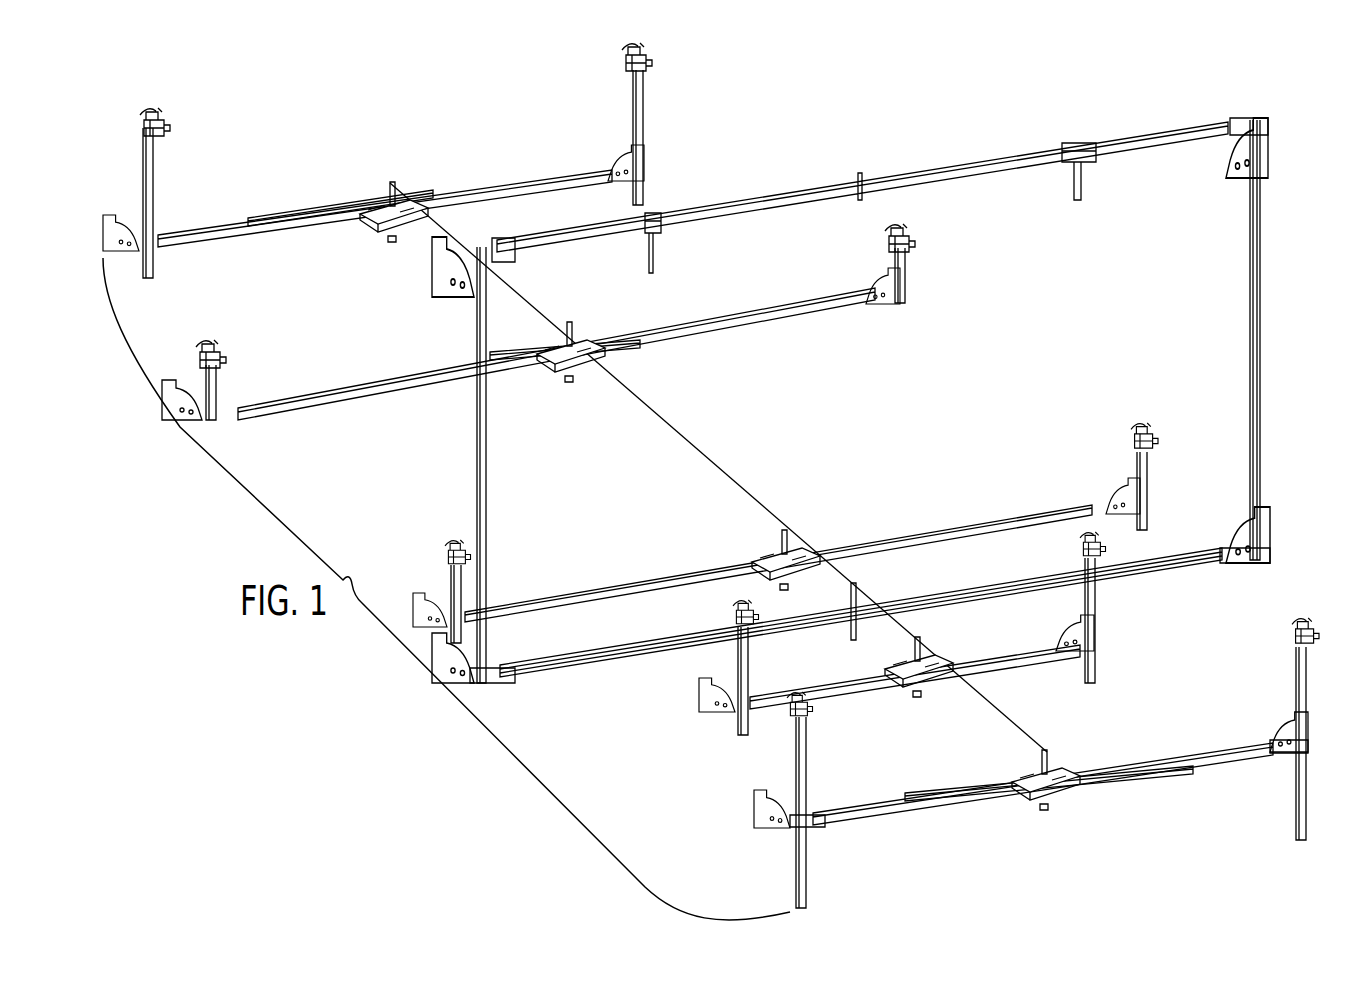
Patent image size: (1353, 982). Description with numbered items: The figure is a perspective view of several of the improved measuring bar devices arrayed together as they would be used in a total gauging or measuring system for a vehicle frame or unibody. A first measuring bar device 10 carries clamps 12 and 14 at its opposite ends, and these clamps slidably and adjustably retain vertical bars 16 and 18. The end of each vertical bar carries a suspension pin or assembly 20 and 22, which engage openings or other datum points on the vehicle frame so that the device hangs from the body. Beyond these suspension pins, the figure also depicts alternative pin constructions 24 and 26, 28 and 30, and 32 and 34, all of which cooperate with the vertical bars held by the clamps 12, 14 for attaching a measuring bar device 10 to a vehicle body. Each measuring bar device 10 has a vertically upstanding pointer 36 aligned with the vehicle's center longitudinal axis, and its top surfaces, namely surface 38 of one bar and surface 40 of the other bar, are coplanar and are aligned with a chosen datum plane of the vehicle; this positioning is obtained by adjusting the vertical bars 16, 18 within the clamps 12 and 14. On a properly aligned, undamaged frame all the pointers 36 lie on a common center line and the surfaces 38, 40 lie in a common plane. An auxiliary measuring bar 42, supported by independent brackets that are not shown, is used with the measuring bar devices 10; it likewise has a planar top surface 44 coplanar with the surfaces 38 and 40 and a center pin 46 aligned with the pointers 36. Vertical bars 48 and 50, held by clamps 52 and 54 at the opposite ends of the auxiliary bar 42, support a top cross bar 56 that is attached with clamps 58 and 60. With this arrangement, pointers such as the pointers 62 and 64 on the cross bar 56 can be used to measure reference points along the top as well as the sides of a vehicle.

The measuring bar device 10 is at (1104, 797).
The clamp 12 is at (812, 798).
The clamp 14 is at (1282, 728).
The vertical bar 16 is at (803, 758).
The vertical bar 18 is at (1296, 680).
The suspension pin 20 is at (812, 698).
The suspension pin 22 is at (1296, 625).
The alternative pin construction 24 is at (757, 605).
The alternative pin construction 26 is at (1082, 550).
The alternative pin construction 28 is at (458, 543).
The alternative pin construction 30 is at (1152, 428).
The alternative pin construction 32 is at (168, 128).
The alternative pin construction 34 is at (650, 60).
The vertically upstanding pointer 36 is at (1050, 758).
The top surface 38 is at (1140, 760).
The top surface 40 is at (865, 806).
The auxiliary measuring bar 42 is at (931, 592).
The planar top surface 44 is at (977, 592).
The center pin 46 is at (856, 592).
The vertical bar 48 is at (488, 492).
The vertical bar 50 is at (1250, 318).
The clamp 52 is at (500, 660).
The clamp 54 is at (1235, 522).
The top cross bar 56 is at (740, 200).
The clamp 58 is at (508, 262).
The clamp 60 is at (1238, 150).
The pointer 62 is at (660, 250).
The pointer 64 is at (1088, 185).